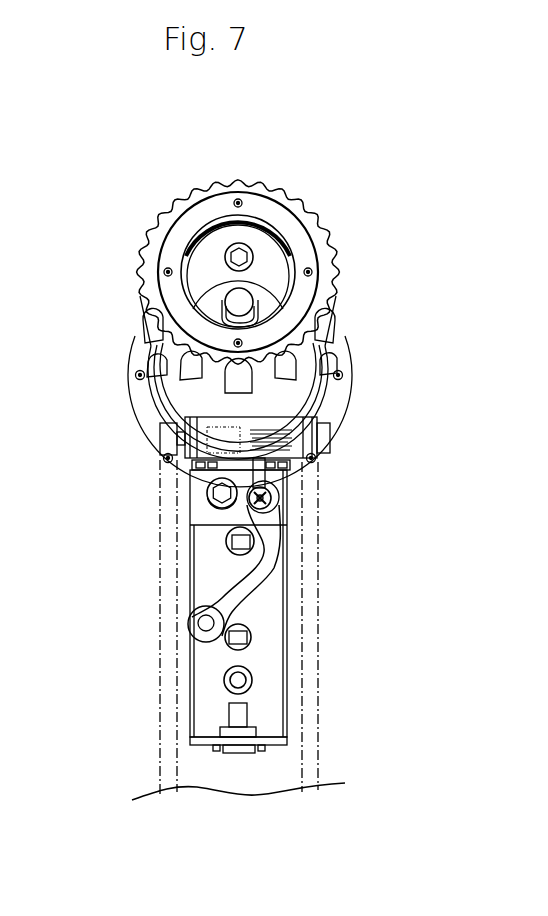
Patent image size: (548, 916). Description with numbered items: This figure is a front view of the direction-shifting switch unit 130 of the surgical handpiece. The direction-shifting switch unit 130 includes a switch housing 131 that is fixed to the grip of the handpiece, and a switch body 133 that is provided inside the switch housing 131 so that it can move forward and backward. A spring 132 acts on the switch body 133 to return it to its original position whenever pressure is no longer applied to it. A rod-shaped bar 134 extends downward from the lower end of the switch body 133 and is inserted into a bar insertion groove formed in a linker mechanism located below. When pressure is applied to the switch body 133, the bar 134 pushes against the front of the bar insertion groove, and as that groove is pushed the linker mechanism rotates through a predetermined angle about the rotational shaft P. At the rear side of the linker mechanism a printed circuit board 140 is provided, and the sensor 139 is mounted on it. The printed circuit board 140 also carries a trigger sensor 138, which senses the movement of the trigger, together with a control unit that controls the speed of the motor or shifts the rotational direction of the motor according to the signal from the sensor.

The direction-shifting switch unit 130 is at (146, 572).
The switch housing 131 is at (346, 382).
The spring 132 is at (322, 412).
The switch body 133 is at (327, 436).
The bar 134 is at (258, 476).
The rotational shaft P is at (272, 497).
The trigger sensor 138 is at (254, 544).
The sensor 139 is at (251, 637).
The printed circuit board 140 is at (270, 689).